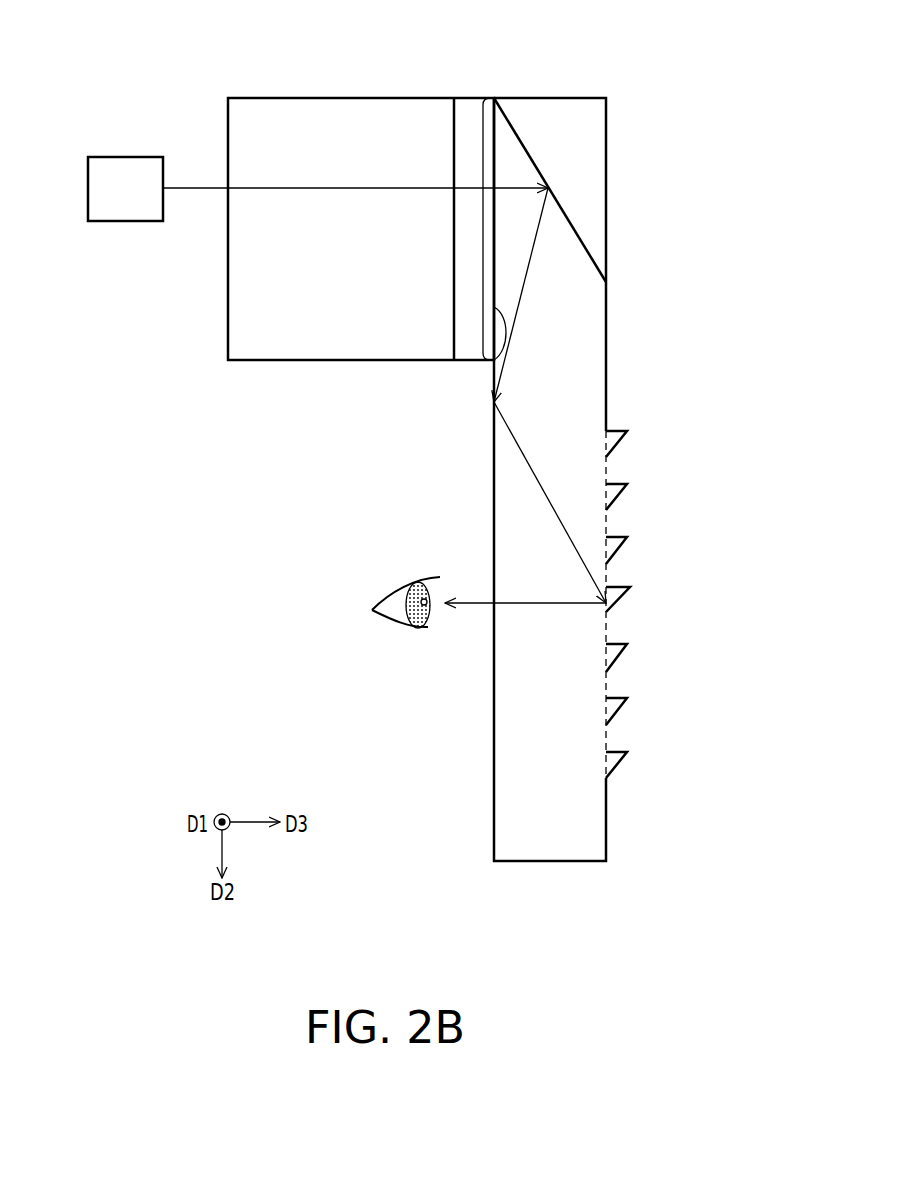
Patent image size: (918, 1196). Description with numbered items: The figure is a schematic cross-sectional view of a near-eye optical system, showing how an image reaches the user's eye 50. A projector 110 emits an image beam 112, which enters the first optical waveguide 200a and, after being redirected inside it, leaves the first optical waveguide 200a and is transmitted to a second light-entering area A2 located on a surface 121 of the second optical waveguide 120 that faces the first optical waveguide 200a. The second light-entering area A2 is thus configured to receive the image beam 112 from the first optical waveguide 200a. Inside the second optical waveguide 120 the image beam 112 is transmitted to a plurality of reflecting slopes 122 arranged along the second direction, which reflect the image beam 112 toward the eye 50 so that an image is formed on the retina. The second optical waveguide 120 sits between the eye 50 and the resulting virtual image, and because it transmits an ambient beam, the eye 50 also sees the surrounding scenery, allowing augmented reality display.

The first optical waveguide 200a is at (382, 130).
The projector 110 is at (125, 182).
The image beam 112 is at (200, 188).
The second light-entering area A2 is at (480, 212).
The second optical waveguide 120 is at (535, 690).
The surface 121 is at (492, 362).
The reflecting slopes 122 is at (612, 607).
The eye 50 is at (406, 583).